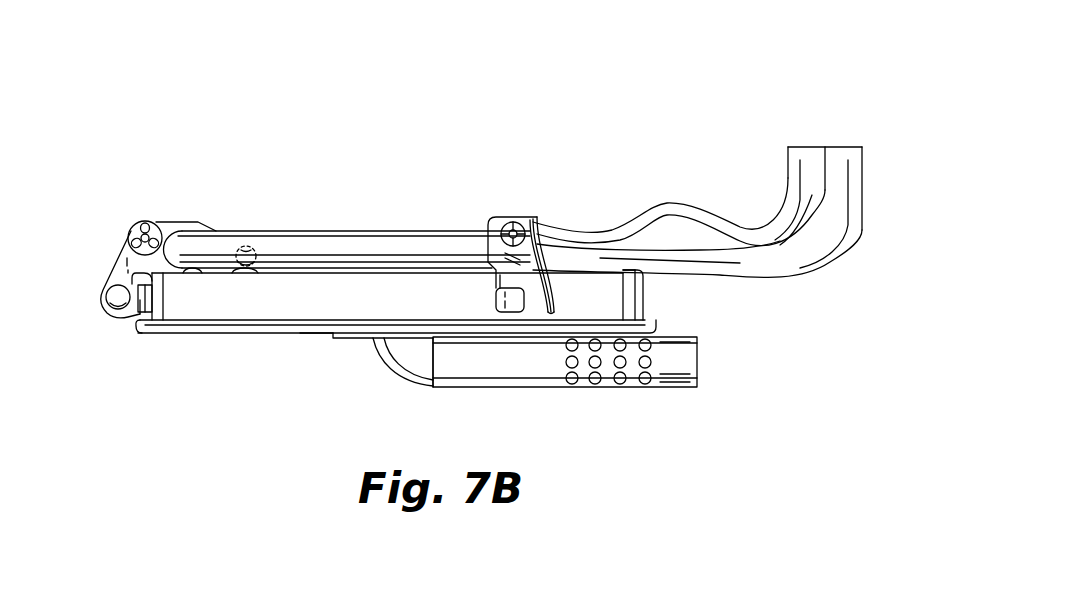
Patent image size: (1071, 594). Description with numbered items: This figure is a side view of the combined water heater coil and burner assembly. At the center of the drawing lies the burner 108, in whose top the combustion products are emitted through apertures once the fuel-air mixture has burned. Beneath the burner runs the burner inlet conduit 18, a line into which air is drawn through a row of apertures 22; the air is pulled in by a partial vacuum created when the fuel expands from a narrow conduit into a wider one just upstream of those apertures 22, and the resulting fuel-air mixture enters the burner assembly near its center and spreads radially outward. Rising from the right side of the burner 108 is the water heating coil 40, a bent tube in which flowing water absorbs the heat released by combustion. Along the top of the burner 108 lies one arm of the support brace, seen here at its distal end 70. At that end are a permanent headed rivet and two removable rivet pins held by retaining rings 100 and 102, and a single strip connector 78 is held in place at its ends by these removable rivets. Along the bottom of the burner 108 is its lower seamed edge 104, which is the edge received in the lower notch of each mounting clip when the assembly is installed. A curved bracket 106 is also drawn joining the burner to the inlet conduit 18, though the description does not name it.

The burner inlet conduit 18 is at (692, 387).
The apertures 22 is at (612, 387).
The water heating coil 40 is at (837, 252).
The distal ends 70 is at (93, 287).
The single strip connectors 78 is at (180, 223).
The retaining ring 100 is at (145, 221).
The retaining ring 102 is at (235, 246).
The lower seamed edge 104 is at (141, 333).
The support bracket 106 is at (352, 337).
The burner 108 is at (647, 292).